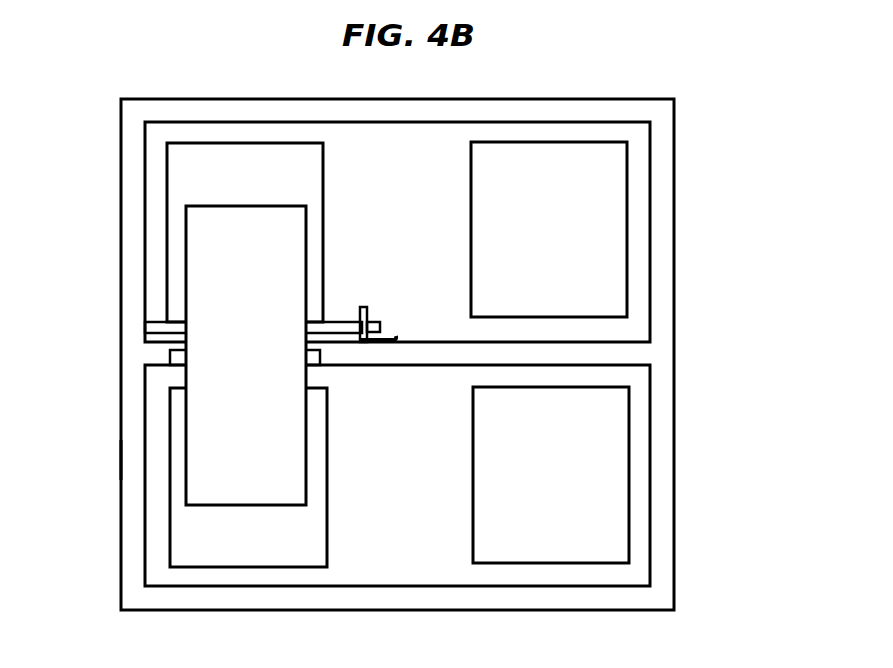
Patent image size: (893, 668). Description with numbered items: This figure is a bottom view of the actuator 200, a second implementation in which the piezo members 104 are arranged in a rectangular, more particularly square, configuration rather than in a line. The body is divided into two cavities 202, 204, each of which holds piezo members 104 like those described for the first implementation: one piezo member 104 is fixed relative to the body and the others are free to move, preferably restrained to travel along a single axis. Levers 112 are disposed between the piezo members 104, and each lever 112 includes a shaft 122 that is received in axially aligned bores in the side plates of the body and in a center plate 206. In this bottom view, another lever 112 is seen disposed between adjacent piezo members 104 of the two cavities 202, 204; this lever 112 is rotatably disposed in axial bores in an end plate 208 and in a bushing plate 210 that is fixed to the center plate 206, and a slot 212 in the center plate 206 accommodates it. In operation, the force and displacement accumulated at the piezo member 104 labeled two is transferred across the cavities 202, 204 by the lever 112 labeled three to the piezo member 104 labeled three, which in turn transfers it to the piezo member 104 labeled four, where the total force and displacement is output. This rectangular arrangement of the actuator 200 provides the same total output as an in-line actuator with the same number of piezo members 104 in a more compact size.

The actuator 200 is at (142, 84).
The cavity 202 is at (427, 133).
The cavity 204 is at (370, 575).
The center plate 206 is at (635, 354).
The end plate 208 is at (122, 460).
The bushing plate 210 is at (370, 311).
The slot 212 is at (173, 360).
The piezo member 104 is at (167, 200).
The lever 112 is at (246, 206).
The shaft 122 is at (158, 323).